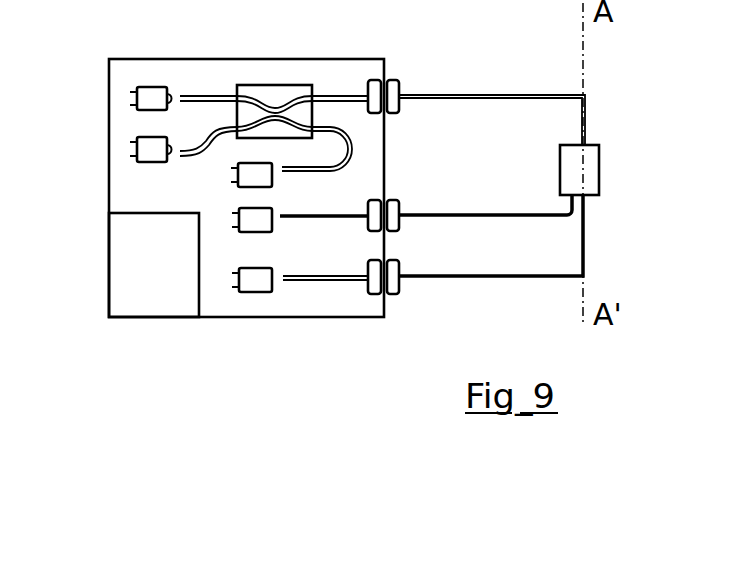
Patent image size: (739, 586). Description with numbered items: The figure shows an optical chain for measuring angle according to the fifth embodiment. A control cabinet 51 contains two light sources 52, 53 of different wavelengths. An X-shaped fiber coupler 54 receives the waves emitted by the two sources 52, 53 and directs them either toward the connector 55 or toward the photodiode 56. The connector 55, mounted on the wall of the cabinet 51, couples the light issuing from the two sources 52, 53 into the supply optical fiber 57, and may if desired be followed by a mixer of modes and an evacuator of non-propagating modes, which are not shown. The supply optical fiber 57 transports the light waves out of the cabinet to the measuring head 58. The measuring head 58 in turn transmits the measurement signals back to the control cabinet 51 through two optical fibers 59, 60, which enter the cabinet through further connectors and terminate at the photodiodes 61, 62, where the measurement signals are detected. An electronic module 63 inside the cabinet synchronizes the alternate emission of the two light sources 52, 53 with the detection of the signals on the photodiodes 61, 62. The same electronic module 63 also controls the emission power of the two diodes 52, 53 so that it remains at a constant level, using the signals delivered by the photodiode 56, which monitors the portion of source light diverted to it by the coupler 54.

The control cabinet 51 is at (213, 290).
The light source 52 is at (148, 98).
The light source 53 is at (148, 149).
The X-shaped fiber coupler 54 is at (266, 93).
The connector 55 is at (393, 94).
The photodiode 56 is at (252, 177).
The supply optical fiber 57 is at (468, 94).
The measuring head 58 is at (590, 178).
The optical fiber 59 is at (465, 277).
The optical fiber 60 is at (457, 213).
The photodiode 61 is at (262, 286).
The photodiode 62 is at (250, 223).
The electronic module 63 is at (145, 270).